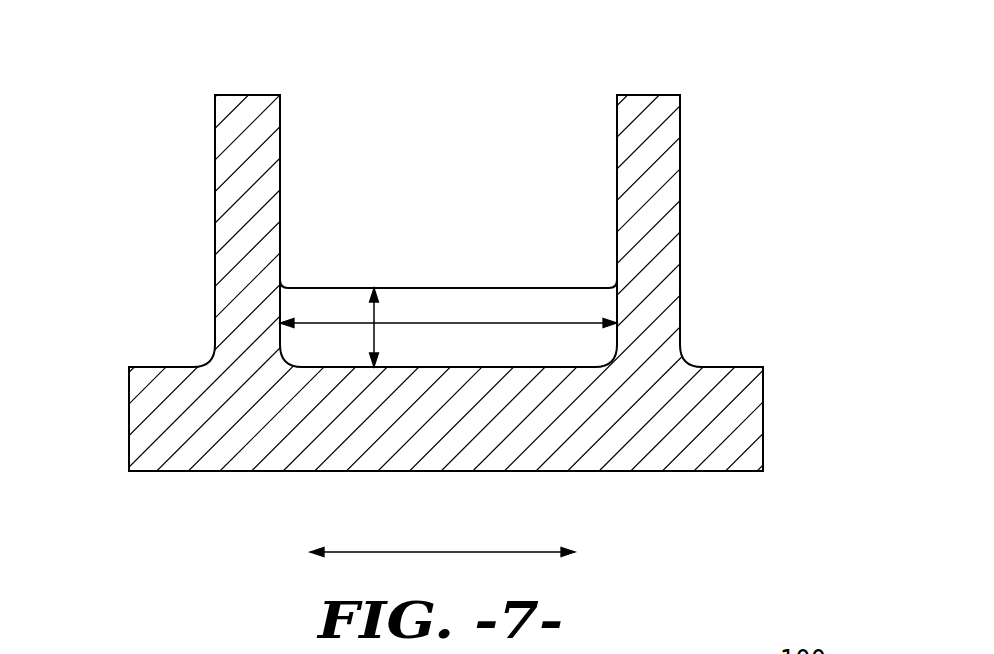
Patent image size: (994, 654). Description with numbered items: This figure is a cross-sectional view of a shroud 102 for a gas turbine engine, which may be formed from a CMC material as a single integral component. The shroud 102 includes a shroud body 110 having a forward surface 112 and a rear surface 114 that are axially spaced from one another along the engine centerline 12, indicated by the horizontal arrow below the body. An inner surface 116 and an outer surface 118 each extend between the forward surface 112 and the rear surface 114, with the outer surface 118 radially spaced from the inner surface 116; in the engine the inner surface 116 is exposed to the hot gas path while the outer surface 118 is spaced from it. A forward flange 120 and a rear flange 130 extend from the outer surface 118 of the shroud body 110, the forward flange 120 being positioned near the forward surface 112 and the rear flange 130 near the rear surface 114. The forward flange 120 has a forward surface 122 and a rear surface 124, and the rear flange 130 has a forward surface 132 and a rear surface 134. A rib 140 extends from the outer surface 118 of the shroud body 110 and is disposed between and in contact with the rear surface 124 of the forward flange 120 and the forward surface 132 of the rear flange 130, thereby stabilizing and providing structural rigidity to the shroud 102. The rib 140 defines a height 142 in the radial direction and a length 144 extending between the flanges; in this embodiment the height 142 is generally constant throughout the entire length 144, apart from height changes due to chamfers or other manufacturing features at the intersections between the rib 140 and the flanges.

The shroud 102 is at (497, 238).
The shroud body 110 is at (238, 450).
The forward surface 112 is at (129, 392).
The rear surface 114 is at (763, 402).
The inner surface 116 is at (305, 472).
The outer surface 118 is at (478, 370).
The forward flange 120 is at (195, 129).
The forward surface of forward flange 122 is at (215, 235).
The rear surface of forward flange 124 is at (280, 170).
The rear flange 130 is at (595, 129).
The forward surface of rear flange 132 is at (616, 210).
The rear surface of rear flange 134 is at (680, 225).
The rib 140 is at (399, 275).
The height 142 is at (374, 328).
The length 144 is at (512, 323).
The centerline 12 is at (463, 552).